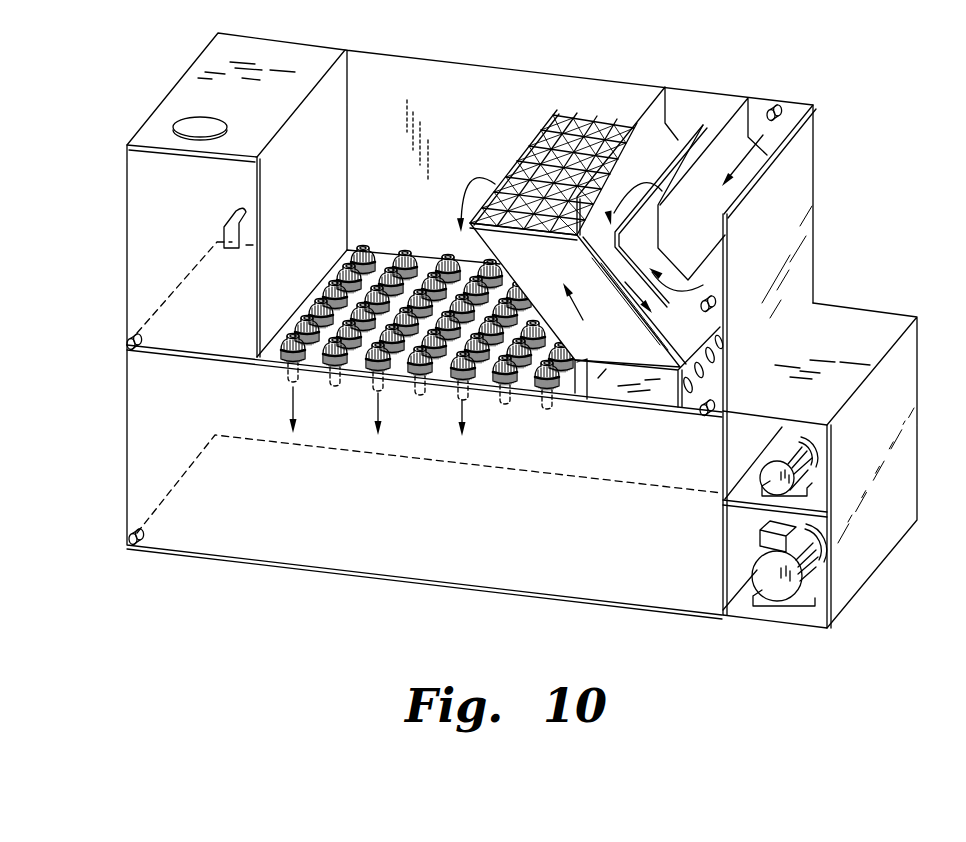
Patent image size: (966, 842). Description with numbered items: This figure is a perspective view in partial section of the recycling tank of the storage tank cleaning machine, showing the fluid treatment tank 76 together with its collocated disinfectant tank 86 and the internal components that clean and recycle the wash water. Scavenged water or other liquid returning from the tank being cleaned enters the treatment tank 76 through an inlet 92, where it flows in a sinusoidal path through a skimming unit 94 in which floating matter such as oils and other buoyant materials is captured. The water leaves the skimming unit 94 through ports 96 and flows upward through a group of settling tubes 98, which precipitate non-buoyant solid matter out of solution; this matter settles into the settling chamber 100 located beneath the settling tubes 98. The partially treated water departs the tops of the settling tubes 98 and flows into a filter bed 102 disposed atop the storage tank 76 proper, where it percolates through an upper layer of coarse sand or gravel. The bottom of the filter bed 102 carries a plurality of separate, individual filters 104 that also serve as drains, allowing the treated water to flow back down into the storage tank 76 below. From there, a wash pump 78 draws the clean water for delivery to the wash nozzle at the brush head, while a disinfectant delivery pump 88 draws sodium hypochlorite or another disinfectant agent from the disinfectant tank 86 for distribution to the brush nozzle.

The treatment tank 76 is at (328, 571).
The wash pump 78 is at (752, 567).
The disinfectant tank 86 is at (126, 199).
The disinfectant delivery pump 88 is at (758, 481).
The inlet 92 is at (771, 108).
The skimming unit 94 is at (713, 112).
The ports 96 is at (728, 355).
The settling tubes 98 is at (558, 128).
The settling chamber 100 is at (627, 385).
The filter bed 102 is at (370, 110).
The filters 104 is at (404, 254).